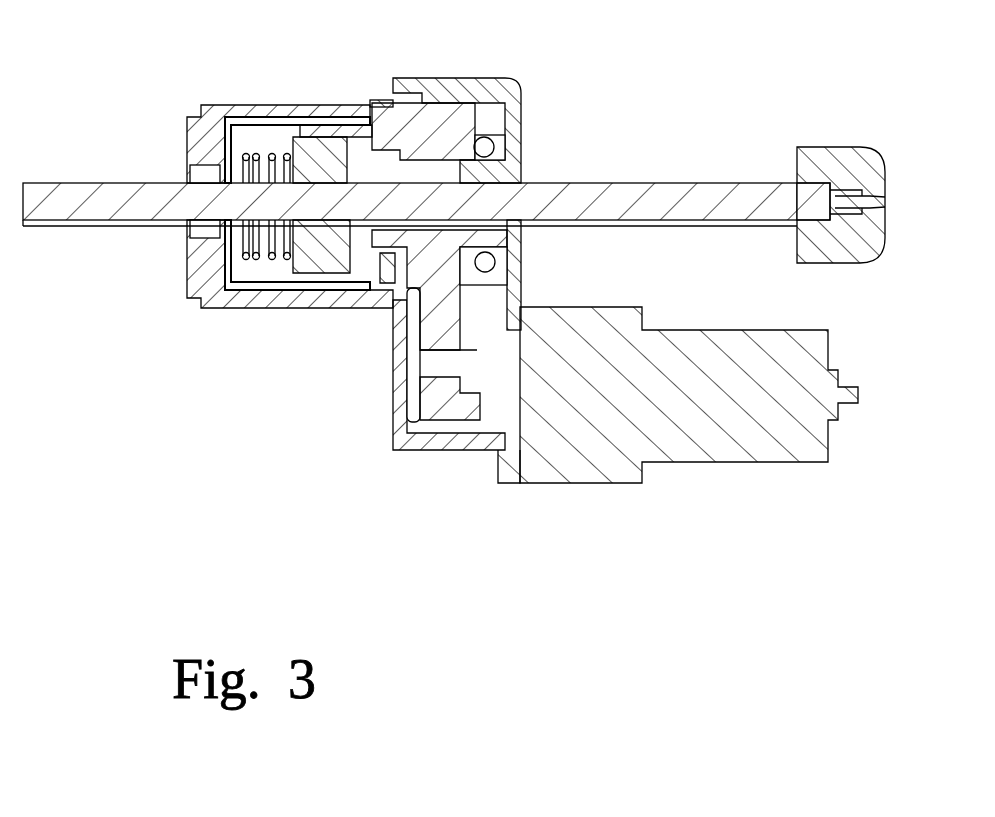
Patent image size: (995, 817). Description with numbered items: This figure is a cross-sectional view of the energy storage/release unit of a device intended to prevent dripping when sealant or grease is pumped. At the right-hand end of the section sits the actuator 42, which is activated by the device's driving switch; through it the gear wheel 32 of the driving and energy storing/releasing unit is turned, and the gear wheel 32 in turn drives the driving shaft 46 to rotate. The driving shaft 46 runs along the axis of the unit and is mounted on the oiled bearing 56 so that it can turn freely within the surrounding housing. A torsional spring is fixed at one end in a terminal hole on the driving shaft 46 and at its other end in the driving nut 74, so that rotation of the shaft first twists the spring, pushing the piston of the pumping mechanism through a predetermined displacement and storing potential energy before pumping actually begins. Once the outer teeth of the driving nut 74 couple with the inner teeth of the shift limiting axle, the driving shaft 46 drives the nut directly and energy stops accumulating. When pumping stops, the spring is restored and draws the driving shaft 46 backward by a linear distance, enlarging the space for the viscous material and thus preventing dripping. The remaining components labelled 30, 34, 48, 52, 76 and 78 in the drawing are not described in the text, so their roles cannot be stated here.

The housing 30 is at (528, 152).
The gear wheel 32 is at (420, 424).
The ball bearing 34 is at (495, 122).
The actuator 42 is at (724, 463).
The driving shaft 46 is at (240, 158).
The end cap 48 is at (218, 272).
The retainer 52 is at (290, 103).
The oiled bearing 56 is at (395, 275).
The driving nut 74 is at (292, 274).
The shaft 76 is at (106, 181).
The shaft head 78 is at (728, 228).